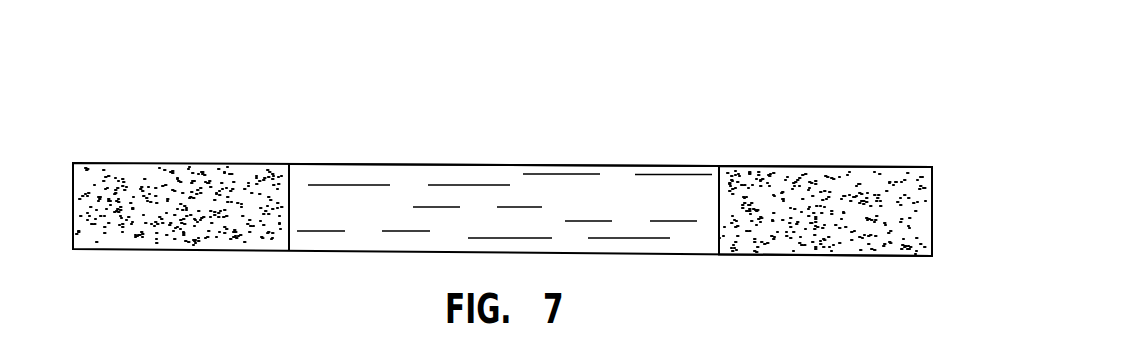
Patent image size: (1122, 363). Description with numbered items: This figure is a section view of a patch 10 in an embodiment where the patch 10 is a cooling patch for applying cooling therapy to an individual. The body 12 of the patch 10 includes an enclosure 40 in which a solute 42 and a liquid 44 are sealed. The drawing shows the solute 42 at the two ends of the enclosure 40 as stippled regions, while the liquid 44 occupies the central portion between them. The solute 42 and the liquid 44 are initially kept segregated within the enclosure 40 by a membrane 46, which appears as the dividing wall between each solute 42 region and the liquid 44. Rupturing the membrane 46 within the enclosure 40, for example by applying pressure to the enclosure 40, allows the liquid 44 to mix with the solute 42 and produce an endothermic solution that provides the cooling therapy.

The patch 10 is at (756, 111).
The body 12 is at (313, 142).
The enclosure 40 is at (827, 165).
The solute 42 is at (175, 228).
The liquid 44 is at (610, 193).
The membrane 46 is at (290, 235).